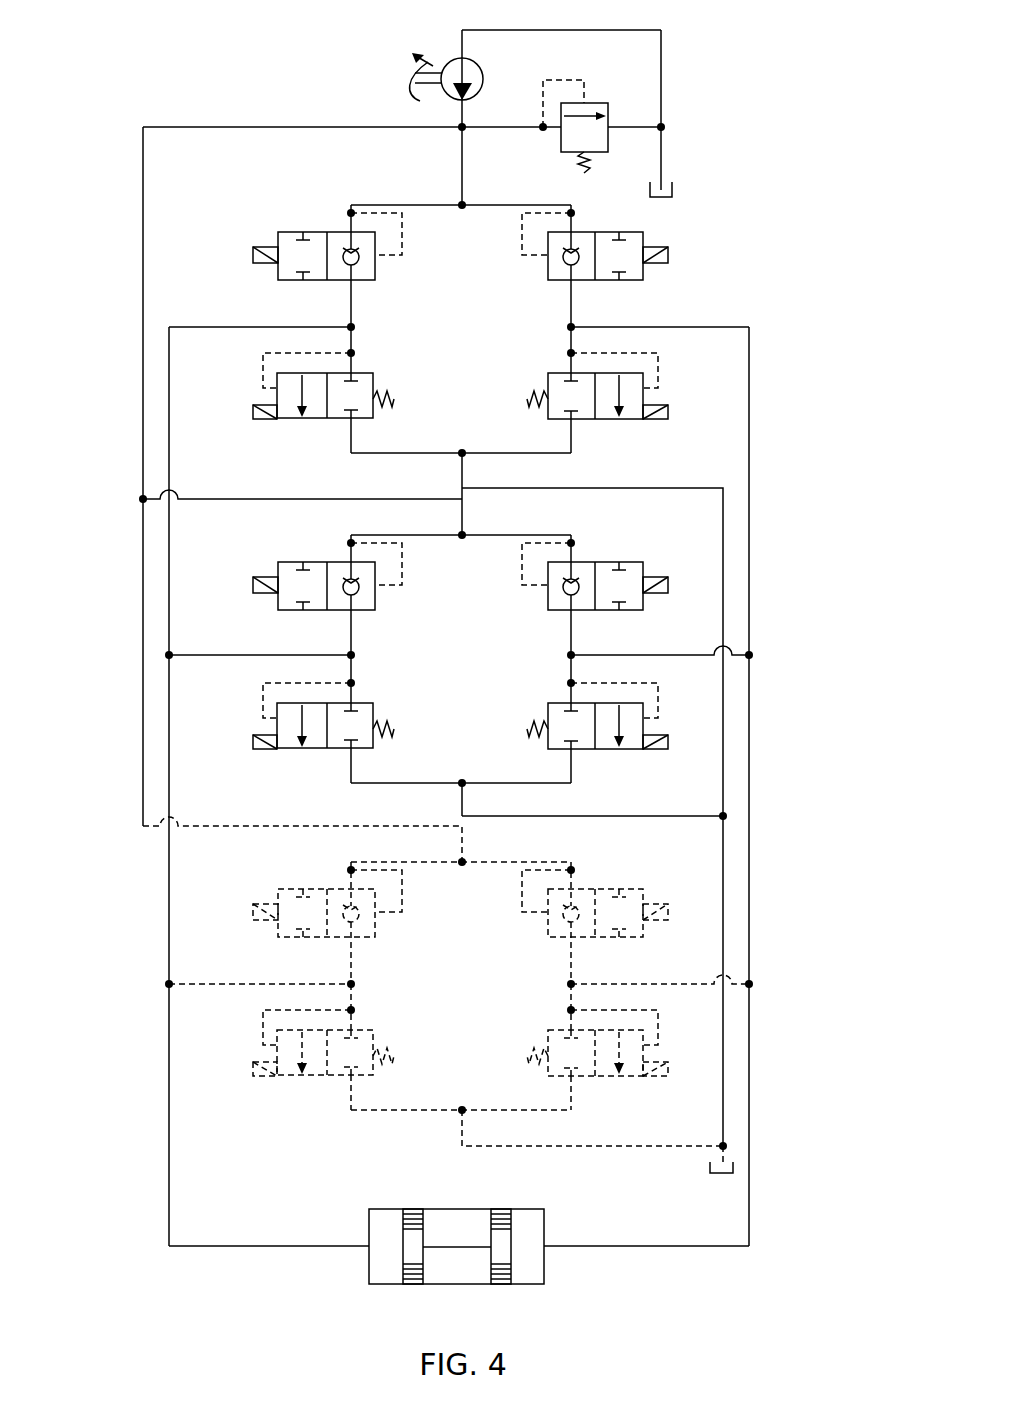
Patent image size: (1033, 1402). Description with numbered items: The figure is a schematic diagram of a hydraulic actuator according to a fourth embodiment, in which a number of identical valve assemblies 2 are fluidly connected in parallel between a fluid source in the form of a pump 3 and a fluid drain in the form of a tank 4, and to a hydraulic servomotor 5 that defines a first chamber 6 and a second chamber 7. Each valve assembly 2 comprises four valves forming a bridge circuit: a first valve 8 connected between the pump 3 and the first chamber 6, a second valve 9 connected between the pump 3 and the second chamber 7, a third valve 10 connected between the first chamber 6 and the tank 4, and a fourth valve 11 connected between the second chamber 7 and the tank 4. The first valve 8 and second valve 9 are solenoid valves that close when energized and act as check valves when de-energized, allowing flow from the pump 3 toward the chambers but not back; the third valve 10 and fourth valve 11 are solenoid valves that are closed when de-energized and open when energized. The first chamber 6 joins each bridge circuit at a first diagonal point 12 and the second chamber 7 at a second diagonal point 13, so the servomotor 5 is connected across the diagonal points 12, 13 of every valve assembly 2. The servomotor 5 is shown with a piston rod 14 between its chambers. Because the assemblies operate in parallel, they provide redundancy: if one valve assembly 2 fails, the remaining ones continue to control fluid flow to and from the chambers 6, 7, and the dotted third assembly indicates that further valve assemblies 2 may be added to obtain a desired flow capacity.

The valve arrangement 2 is at (379, 203).
The pump 3 is at (448, 54).
The tank 4 is at (717, 1175).
The servomotor 5 is at (447, 1285).
The first chamber 6 is at (385, 1230).
The second chamber 7 is at (528, 1237).
The first valve 8 is at (313, 231).
The second valve 9 is at (632, 232).
The third valve 10 is at (337, 421).
The fourth valve 11 is at (607, 372).
The first diagonal point 12 is at (347, 325).
The second diagonal point 13 is at (568, 324).
The piston rod 14 is at (447, 1245).